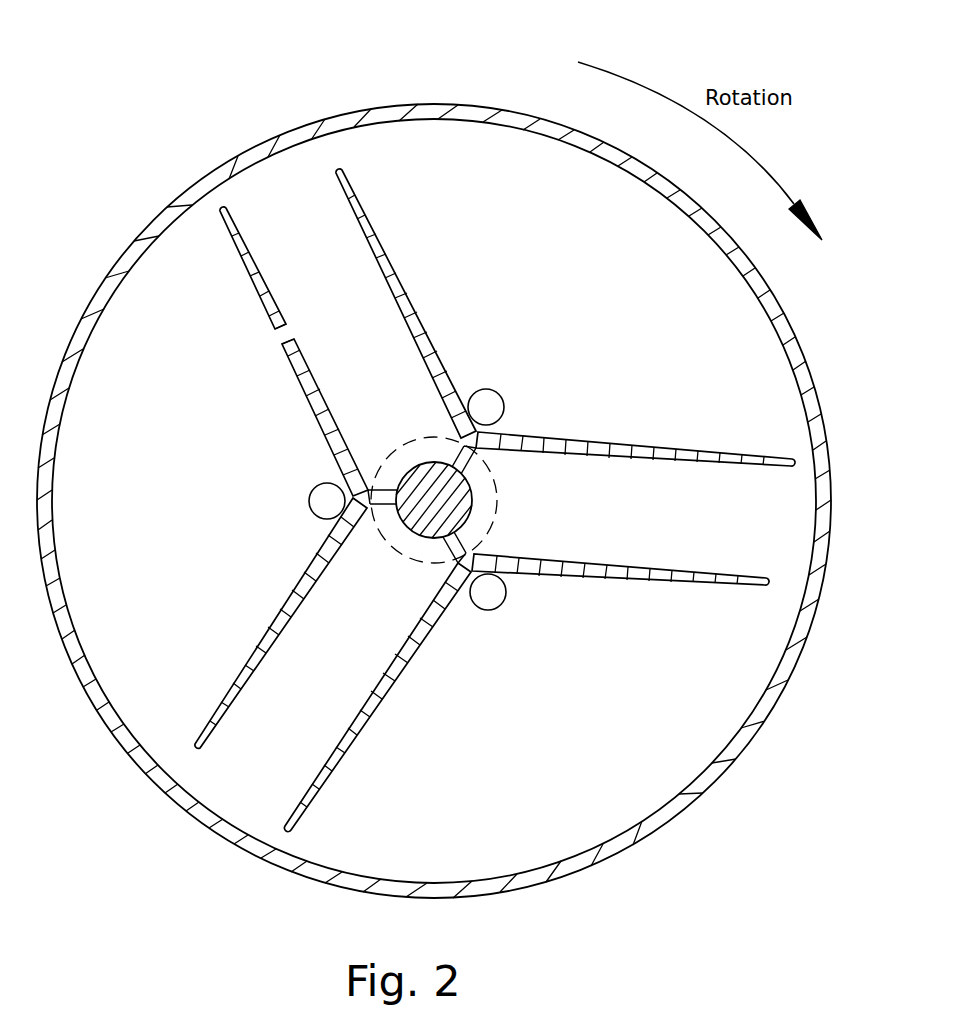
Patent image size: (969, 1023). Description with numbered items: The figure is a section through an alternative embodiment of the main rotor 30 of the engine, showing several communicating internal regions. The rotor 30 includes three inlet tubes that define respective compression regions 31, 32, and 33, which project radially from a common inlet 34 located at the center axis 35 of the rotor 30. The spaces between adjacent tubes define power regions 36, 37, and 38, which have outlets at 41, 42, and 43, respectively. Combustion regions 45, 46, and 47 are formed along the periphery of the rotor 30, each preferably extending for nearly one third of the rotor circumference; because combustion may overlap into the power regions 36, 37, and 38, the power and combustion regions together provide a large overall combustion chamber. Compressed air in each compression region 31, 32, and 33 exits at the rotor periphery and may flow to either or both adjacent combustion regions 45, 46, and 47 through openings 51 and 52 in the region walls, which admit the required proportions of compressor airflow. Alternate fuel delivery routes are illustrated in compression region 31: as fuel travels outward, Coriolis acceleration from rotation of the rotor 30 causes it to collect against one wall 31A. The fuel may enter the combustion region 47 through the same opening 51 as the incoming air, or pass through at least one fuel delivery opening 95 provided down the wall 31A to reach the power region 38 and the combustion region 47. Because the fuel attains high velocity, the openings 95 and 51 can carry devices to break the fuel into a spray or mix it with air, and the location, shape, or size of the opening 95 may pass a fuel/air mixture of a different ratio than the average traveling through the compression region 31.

The rotor 30 is at (111, 158).
The compression region 31 is at (360, 357).
The wall of the compression region 31A is at (333, 412).
The compression region 32 is at (634, 524).
The compression region 33 is at (362, 664).
The common inlet 34 is at (423, 437).
The center axis 35 is at (470, 508).
The power region 36 is at (567, 289).
The power region 37 is at (550, 714).
The power region 38 is at (217, 491).
The outlet 41 is at (499, 413).
The outlet 42 is at (500, 603).
The outlet 43 is at (320, 512).
The combustion region 45 is at (610, 247).
The combustion region 46 is at (582, 792).
The combustion region 47 is at (112, 542).
The opening 51 is at (222, 210).
The opening 52 is at (318, 152).
The fuel delivery opening 95 is at (283, 333).